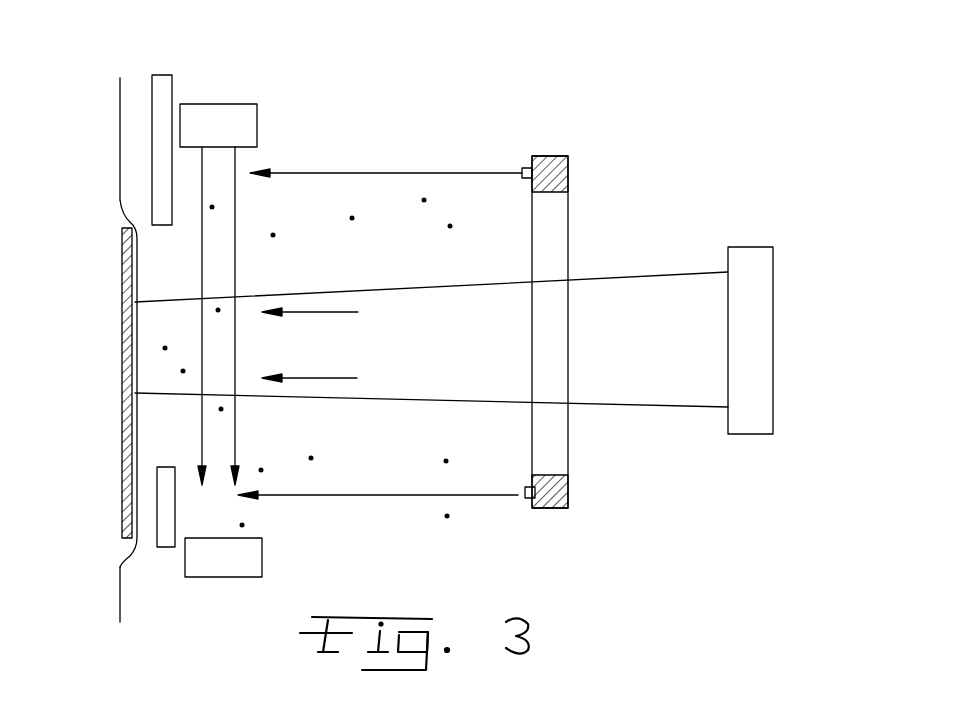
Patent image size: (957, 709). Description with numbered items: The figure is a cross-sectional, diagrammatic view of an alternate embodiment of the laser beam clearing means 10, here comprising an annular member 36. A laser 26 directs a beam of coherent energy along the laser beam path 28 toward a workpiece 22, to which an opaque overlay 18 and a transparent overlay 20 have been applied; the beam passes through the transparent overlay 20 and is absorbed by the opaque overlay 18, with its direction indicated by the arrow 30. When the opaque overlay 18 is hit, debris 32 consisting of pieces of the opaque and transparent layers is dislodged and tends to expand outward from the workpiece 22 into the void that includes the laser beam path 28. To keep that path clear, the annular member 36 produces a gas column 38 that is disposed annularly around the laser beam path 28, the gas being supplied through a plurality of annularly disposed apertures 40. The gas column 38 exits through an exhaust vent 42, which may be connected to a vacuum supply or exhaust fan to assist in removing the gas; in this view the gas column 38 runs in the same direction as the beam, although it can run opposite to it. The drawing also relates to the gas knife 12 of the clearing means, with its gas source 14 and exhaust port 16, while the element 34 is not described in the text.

The laser beam clearing means 10 is at (573, 192).
The gas knife 12 is at (265, 138).
The gas source 14 is at (243, 104).
The exhaust port 16 is at (210, 577).
The opaque overlay 18 is at (128, 328).
The transparent overlay 20 is at (129, 224).
The workpiece 22 is at (120, 118).
The laser 26 is at (760, 434).
The laser beam path 28 is at (452, 297).
The arrow 30 is at (310, 312).
The debris 32 is at (424, 200).
The sensor lines 34 is at (202, 250).
The annular member 36 is at (560, 460).
The gas column 38 is at (390, 497).
The apertures 40 is at (524, 168).
The exhaust vent 42 is at (163, 75).